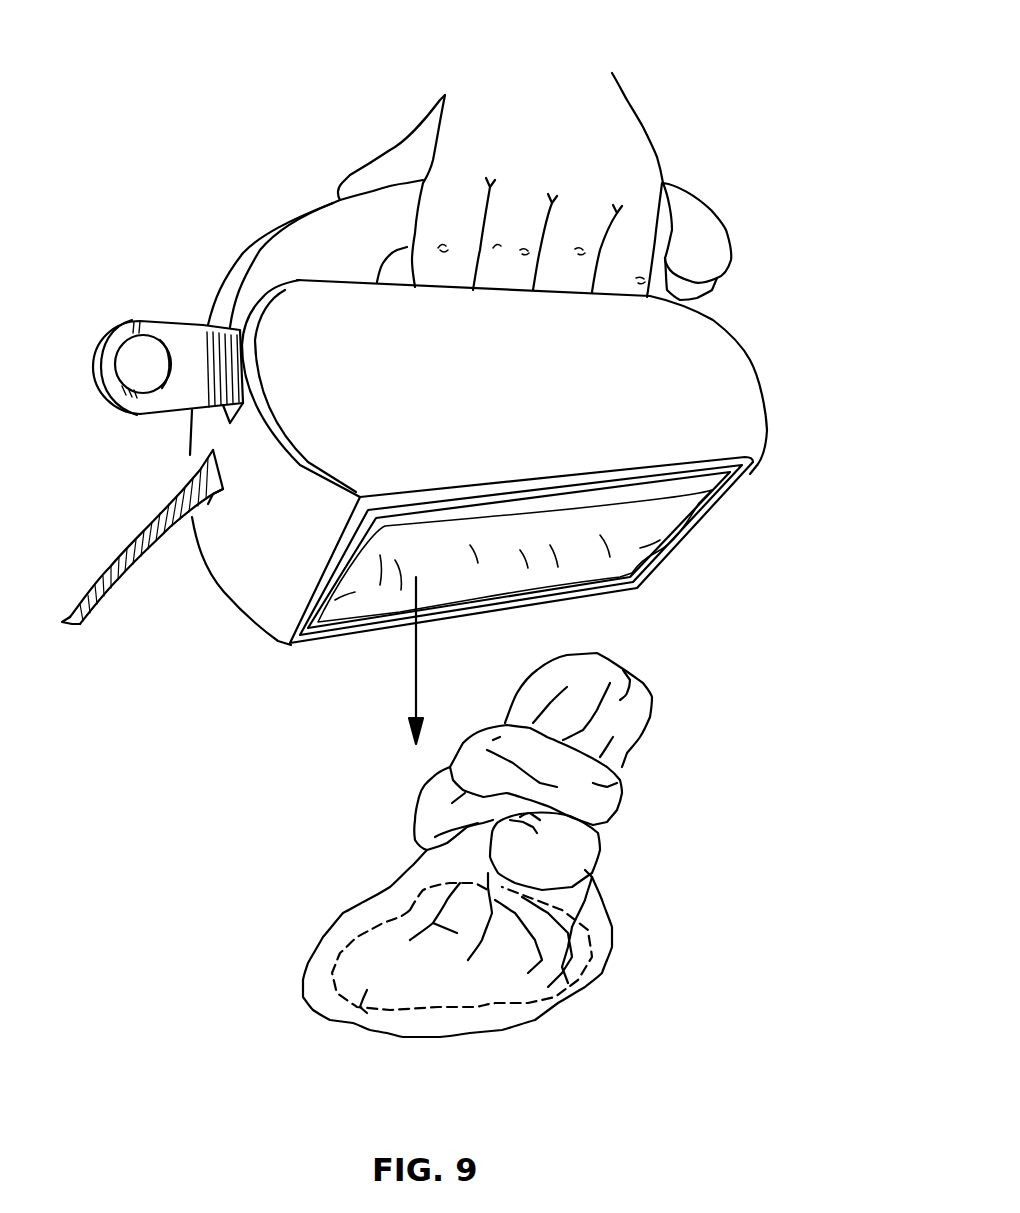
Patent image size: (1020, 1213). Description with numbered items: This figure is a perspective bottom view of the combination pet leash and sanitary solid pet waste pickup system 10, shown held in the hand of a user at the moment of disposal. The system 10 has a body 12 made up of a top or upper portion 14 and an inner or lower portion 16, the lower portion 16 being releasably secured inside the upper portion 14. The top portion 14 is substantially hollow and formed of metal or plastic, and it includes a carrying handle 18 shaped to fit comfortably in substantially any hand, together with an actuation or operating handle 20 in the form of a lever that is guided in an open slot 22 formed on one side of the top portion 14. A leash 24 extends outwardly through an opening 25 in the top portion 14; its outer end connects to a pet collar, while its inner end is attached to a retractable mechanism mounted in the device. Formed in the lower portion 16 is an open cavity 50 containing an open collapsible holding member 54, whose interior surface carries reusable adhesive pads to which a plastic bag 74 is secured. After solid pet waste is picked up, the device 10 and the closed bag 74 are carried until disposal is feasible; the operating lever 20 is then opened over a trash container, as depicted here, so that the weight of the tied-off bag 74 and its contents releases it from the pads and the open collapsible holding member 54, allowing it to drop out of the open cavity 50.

The combination pet leash and sanitary solid pet waste pickup system 10 is at (466, 430).
The body 12 is at (548, 449).
The top or upper portion 14 is at (763, 393).
The inner or lower portion 16 is at (687, 525).
The carrying handle 18 is at (702, 223).
The actuation or operating handle 20 is at (148, 320).
The open slot 22 is at (227, 422).
The leash 24 is at (142, 554).
The opening 25 is at (208, 503).
The open cavity 50 is at (580, 552).
The collapsible holding member 54 is at (640, 530).
The bag 74 is at (590, 903).